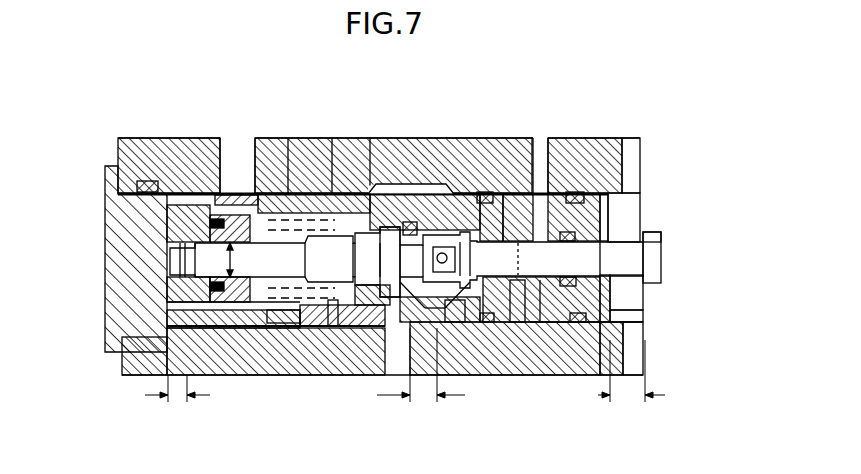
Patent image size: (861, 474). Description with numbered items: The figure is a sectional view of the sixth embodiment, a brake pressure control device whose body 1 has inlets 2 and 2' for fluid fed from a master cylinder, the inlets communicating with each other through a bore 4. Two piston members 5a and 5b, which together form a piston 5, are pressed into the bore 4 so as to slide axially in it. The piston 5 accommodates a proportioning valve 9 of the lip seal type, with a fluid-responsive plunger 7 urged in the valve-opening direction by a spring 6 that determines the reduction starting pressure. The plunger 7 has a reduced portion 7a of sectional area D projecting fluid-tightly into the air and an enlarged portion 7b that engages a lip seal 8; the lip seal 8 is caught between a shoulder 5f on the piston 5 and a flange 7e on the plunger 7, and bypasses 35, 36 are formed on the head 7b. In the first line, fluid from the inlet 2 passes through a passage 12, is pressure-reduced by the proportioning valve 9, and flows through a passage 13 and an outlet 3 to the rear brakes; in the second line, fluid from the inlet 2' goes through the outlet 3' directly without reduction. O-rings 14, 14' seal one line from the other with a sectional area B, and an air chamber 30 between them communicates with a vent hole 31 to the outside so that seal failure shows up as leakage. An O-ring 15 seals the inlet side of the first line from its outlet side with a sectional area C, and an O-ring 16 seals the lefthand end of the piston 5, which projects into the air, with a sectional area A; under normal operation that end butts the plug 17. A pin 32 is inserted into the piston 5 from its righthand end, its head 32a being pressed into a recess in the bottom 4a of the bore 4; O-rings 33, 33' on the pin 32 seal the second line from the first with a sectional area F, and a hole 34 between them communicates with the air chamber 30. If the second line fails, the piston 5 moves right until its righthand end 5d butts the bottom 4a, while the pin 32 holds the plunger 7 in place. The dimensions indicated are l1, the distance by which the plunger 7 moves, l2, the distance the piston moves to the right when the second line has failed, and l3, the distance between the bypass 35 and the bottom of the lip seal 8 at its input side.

The body 1 is at (140, 367).
The inlet 2 is at (370, 139).
The inlet 2' is at (656, 163).
The outlet 3 is at (383, 385).
The outlet 3' is at (664, 348).
The bore 4 is at (472, 215).
The bottom of the bore 4a is at (638, 300).
The piston 5 is at (355, 205).
The piston member 5a is at (478, 195).
The piston member 5b is at (178, 143).
The righthand end of the piston 5d is at (645, 314).
The shoulder 5f is at (385, 186).
The spring 6 is at (289, 228).
The plunger 7 is at (406, 190).
The reduced portion 7a is at (205, 215).
The enlarged portion 7b is at (435, 225).
The flange 7e is at (370, 355).
The lip seal 8 is at (453, 335).
The proportioning valve 9 is at (335, 355).
The passage 12 is at (266, 212).
The passage 13 is at (520, 340).
The O-ring 14 is at (526, 162).
The O-ring 14' is at (651, 138).
The O-ring 15 is at (298, 355).
The O-ring 16 is at (218, 353).
The plug 17 is at (106, 259).
The air chamber 30 is at (540, 160).
The vent hole 31 is at (574, 188).
The pin 32 is at (632, 250).
The head of the pin 32a is at (655, 240).
The O-ring 33 is at (603, 361).
The O-ring 33' is at (662, 360).
The hole 34 is at (595, 165).
The bypass 35 is at (488, 335).
The bypass 36 is at (558, 340).
The sectional area A is at (153, 259).
The sectional area B is at (540, 259).
The sectional area C is at (316, 259).
The sectional area D is at (220, 260).
The sectional area F is at (526, 259).
The plunger travel distance l1 is at (177, 388).
The piston travel distance l2 is at (631, 371).
The bypass-to-seal distance l3 is at (421, 365).